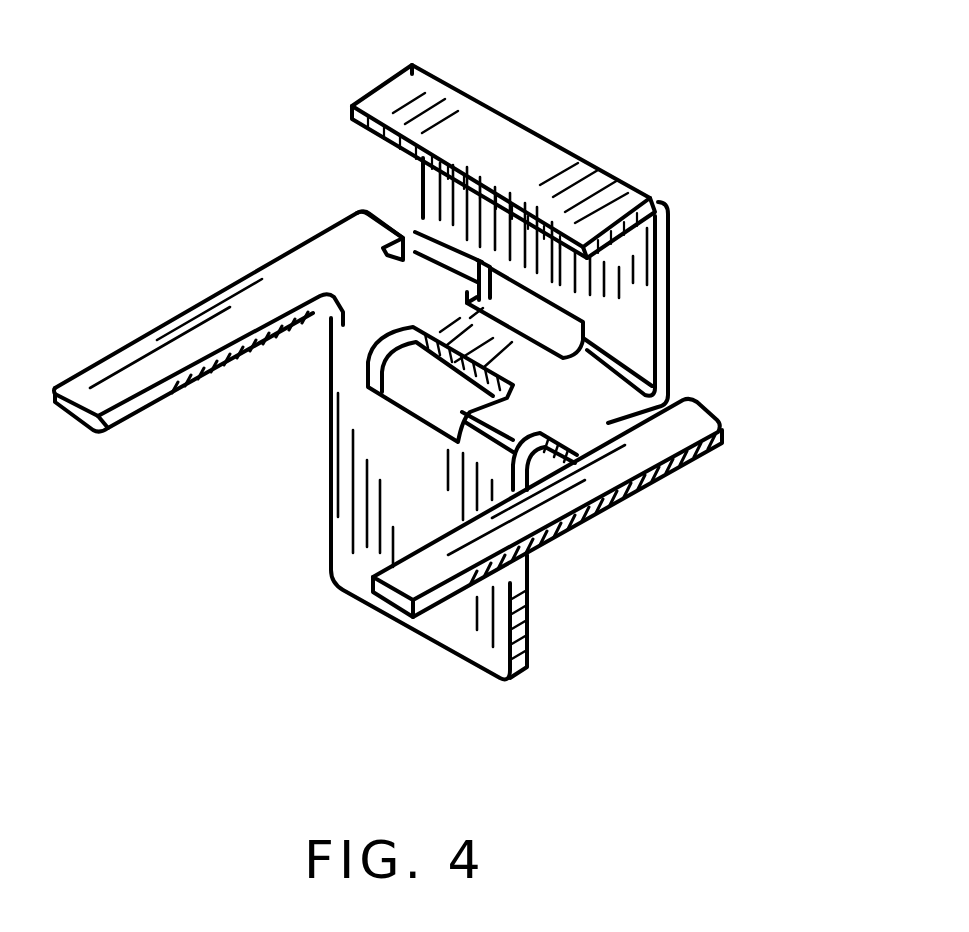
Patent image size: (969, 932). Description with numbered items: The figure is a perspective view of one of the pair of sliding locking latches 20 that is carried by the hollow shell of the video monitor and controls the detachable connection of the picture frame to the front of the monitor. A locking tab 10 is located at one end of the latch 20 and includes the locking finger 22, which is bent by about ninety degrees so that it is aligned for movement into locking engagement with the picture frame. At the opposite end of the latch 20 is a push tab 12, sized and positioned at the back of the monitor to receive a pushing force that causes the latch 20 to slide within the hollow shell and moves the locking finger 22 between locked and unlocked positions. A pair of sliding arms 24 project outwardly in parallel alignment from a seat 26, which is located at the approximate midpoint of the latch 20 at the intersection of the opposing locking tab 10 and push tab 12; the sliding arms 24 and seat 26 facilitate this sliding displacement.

The locking tab 10 is at (660, 296).
The push tab 12 is at (378, 515).
The sliding locking latch 20 is at (710, 363).
The locking finger 22 is at (495, 150).
The sliding arms 24 is at (207, 317).
The seat 26 is at (455, 330).